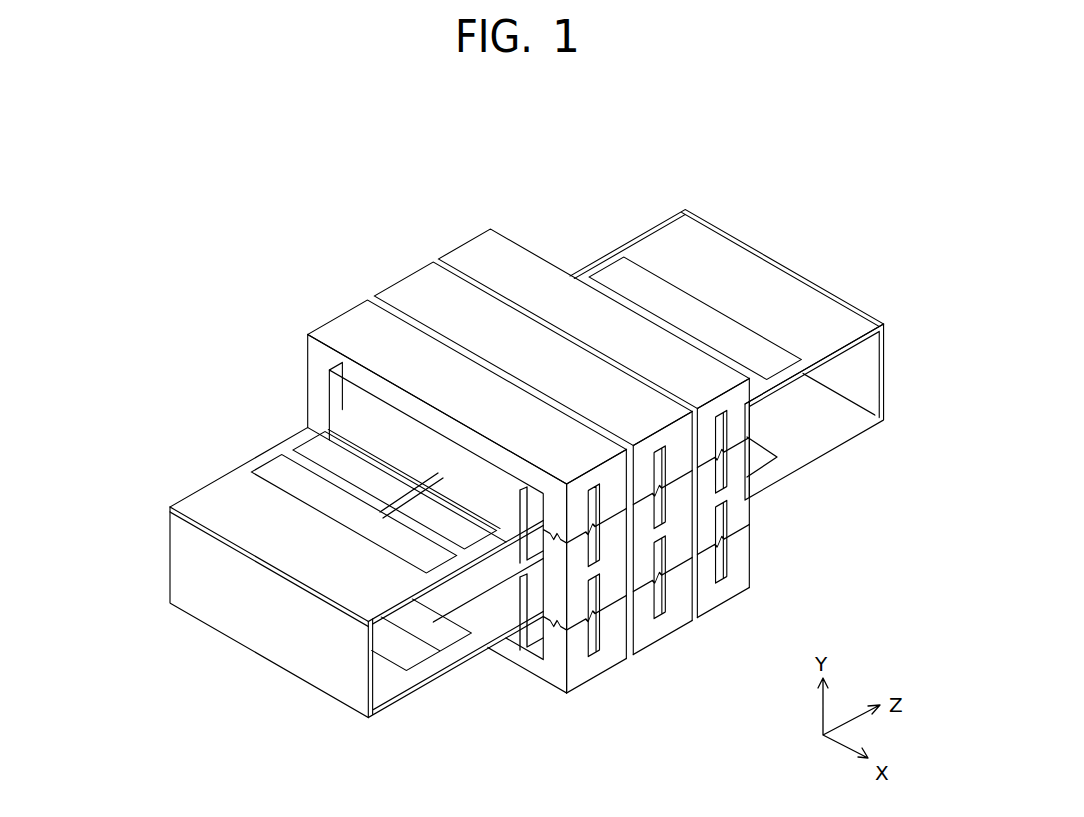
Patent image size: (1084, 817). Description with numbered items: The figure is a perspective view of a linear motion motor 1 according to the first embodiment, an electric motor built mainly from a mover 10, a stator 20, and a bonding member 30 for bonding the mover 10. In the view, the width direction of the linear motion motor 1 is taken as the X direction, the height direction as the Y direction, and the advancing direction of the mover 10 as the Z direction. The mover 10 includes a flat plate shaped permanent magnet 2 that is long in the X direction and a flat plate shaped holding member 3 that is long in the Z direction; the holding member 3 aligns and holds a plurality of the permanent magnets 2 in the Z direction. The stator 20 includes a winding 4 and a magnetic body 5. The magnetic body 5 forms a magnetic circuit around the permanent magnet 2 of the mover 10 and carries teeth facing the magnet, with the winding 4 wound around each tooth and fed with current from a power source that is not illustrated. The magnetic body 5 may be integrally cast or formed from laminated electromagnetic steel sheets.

The linear motion motor 1 is at (311, 201).
The mover 10 is at (143, 453).
The permanent magnet 2 is at (278, 470).
The holding member 3 is at (226, 493).
The stator 20 is at (223, 350).
The winding 4 is at (357, 404).
The magnetic body 5 is at (340, 332).
The bonding member 30 is at (178, 565).